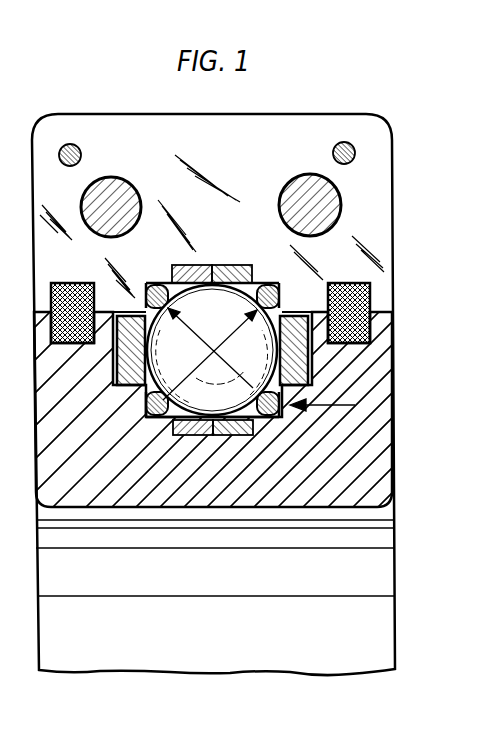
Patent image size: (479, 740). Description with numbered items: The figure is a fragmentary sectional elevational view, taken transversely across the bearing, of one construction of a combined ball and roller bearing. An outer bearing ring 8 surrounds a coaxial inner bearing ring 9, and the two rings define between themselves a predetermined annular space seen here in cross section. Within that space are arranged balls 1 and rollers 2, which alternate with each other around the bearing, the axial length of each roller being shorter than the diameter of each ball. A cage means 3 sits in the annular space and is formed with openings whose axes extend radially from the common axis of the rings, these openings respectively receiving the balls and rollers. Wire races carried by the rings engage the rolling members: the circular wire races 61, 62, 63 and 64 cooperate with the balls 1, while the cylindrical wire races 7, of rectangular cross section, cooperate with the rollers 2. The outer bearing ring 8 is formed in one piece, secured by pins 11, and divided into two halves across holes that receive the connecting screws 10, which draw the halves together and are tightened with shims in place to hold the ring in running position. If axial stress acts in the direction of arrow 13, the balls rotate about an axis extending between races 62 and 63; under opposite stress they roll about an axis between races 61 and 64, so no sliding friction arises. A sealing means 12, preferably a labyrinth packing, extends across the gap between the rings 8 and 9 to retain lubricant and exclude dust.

The balls 1 is at (141, 309).
The rollers 2 is at (250, 286).
The cage means 3 is at (296, 356).
The circular wire race 61 is at (156, 285).
The circular wire race 62 is at (275, 294).
The circular wire race 63 is at (148, 412).
The circular wire race 64 is at (272, 416).
The cylindrical wire races 7 is at (229, 265).
The outer bearing ring 8 is at (389, 216).
The inner bearing ring 9 is at (380, 448).
The connecting screws 10 is at (333, 204).
The pins 11 is at (354, 155).
The sealing means 12 is at (372, 305).
The arrow 13 is at (330, 405).